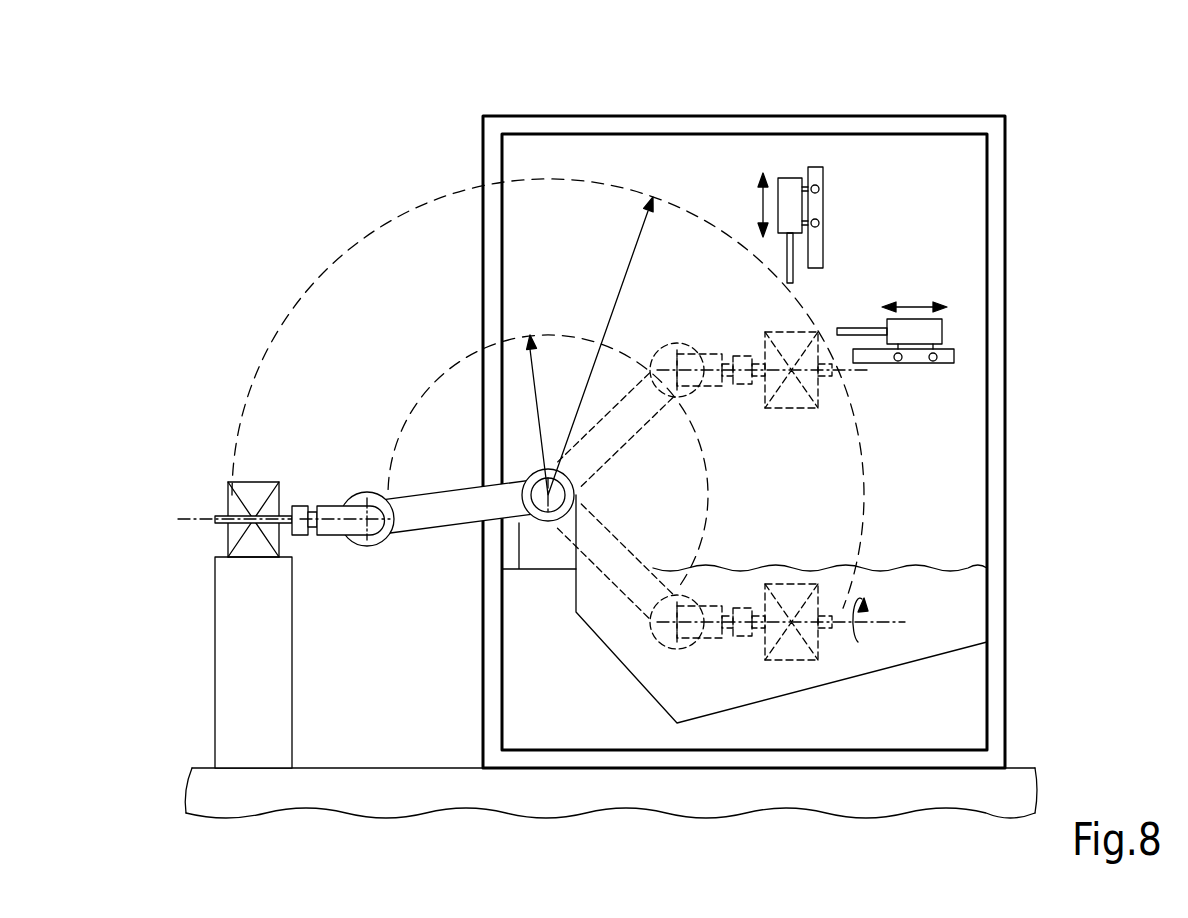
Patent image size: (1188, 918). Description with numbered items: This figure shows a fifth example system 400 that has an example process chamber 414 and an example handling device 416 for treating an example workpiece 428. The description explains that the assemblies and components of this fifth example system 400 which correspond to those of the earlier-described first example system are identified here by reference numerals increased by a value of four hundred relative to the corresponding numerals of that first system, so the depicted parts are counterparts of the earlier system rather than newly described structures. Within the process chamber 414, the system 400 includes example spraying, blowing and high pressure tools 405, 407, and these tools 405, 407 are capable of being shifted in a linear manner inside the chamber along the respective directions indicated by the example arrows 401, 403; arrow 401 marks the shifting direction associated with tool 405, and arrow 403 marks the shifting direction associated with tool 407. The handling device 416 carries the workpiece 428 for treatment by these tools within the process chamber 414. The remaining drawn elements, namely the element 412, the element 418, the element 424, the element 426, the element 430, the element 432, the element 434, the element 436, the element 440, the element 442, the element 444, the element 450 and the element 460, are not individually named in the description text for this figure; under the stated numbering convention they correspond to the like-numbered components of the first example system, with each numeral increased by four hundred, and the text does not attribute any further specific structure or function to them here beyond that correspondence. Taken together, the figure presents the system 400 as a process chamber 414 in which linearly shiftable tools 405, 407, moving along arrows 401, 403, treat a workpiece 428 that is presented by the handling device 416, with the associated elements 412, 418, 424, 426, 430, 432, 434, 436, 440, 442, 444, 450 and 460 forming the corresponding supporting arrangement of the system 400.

The fifth example system 400 is at (1062, 110).
The arrow 401 is at (762, 205).
The arrow 403 is at (914, 305).
The spraying, blowing and high pressure tool 405 is at (796, 206).
The spraying, blowing and high pressure tool 407 is at (914, 346).
The support column 412 is at (232, 737).
The process chamber 414 is at (745, 128).
The handling device 416 is at (428, 540).
The bearing block 418 is at (549, 570).
The coupling 424 is at (305, 536).
The shaft 426 is at (221, 515).
The workpiece 428 is at (253, 482).
The pivot axis 430 is at (528, 495).
The joint 432 is at (386, 500).
The base 434 is at (355, 767).
The rotation direction 436 is at (866, 636).
The pivot bearing 440 is at (561, 477).
The drive cylinder 442 is at (372, 547).
The rotation axis 444 is at (180, 519).
The liquid bath 450 is at (967, 618).
The movement radius circle 460 is at (414, 235).